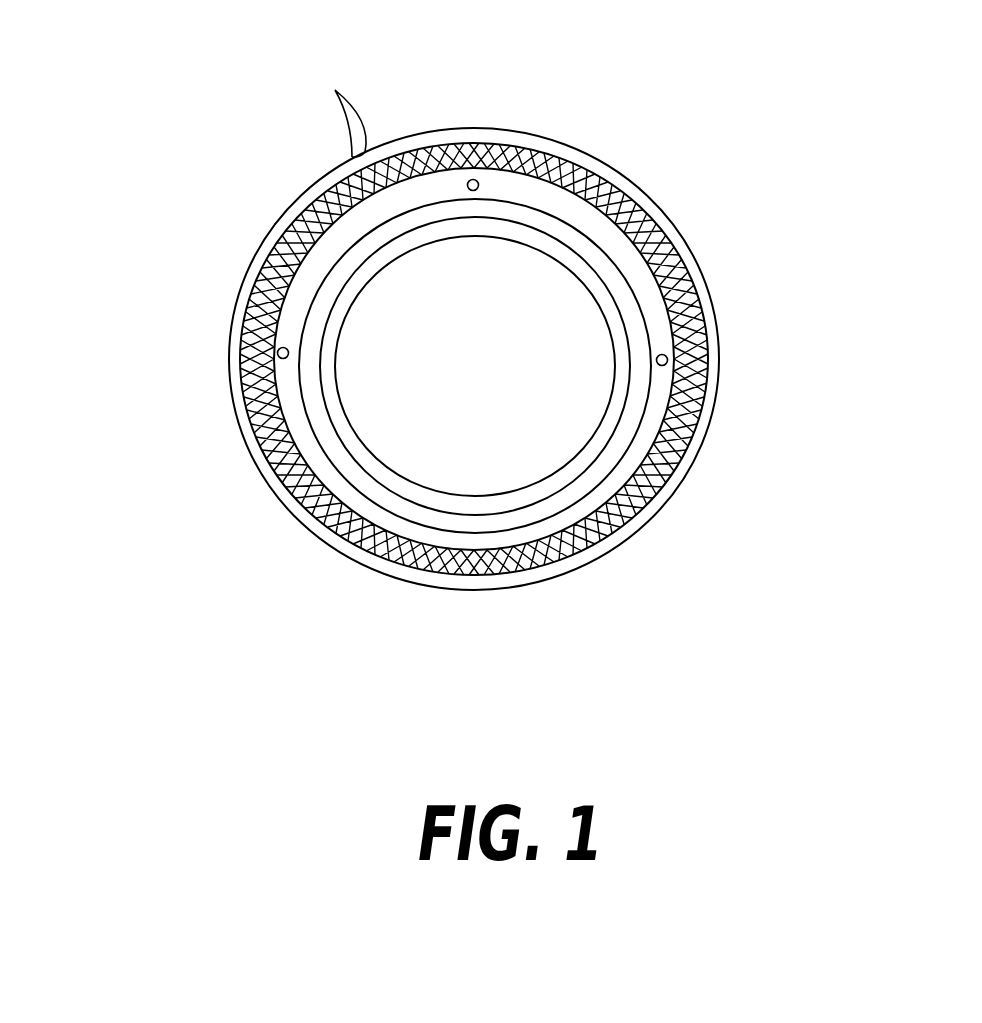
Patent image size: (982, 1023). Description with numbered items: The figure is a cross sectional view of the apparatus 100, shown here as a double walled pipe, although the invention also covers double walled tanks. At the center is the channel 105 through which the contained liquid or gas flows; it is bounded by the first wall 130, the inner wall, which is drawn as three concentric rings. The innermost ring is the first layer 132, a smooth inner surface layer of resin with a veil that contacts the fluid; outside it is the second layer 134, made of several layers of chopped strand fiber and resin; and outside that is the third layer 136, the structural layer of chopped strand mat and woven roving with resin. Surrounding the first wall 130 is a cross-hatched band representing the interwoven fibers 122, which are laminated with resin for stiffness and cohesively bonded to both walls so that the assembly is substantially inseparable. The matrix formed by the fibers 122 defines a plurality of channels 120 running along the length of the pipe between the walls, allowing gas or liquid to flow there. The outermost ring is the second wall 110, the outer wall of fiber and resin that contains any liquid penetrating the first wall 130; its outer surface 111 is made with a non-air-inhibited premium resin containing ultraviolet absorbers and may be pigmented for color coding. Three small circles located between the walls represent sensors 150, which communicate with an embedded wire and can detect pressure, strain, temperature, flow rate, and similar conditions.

The apparatus 100 is at (132, 220).
The channel 105 is at (496, 387).
The second wall 110 is at (612, 175).
The outer surface 111 is at (672, 218).
The channels 120 is at (442, 143).
The fibers 122 is at (338, 105).
The first wall 130 is at (567, 286).
The first layer 132 is at (615, 395).
The second layer 134 is at (620, 448).
The third layer 136 is at (613, 493).
The sensor 150 is at (477, 181).